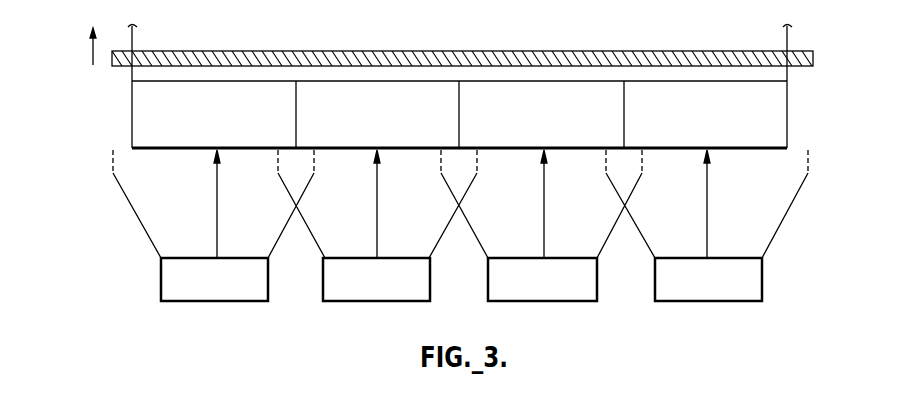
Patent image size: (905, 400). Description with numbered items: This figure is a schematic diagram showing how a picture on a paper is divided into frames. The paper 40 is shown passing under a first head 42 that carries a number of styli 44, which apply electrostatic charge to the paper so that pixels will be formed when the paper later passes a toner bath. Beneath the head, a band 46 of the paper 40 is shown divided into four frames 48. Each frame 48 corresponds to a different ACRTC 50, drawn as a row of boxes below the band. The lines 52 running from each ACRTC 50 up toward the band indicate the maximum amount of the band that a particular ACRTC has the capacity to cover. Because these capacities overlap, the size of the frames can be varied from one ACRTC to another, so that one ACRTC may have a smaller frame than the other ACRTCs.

The paper 40 is at (131, 72).
The first head 42 is at (155, 51).
The styli 44 is at (213, 62).
The band 46 is at (797, 81).
The frame 48 is at (147, 96).
The ACRTC 50 is at (240, 301).
The lines 52 is at (154, 248).